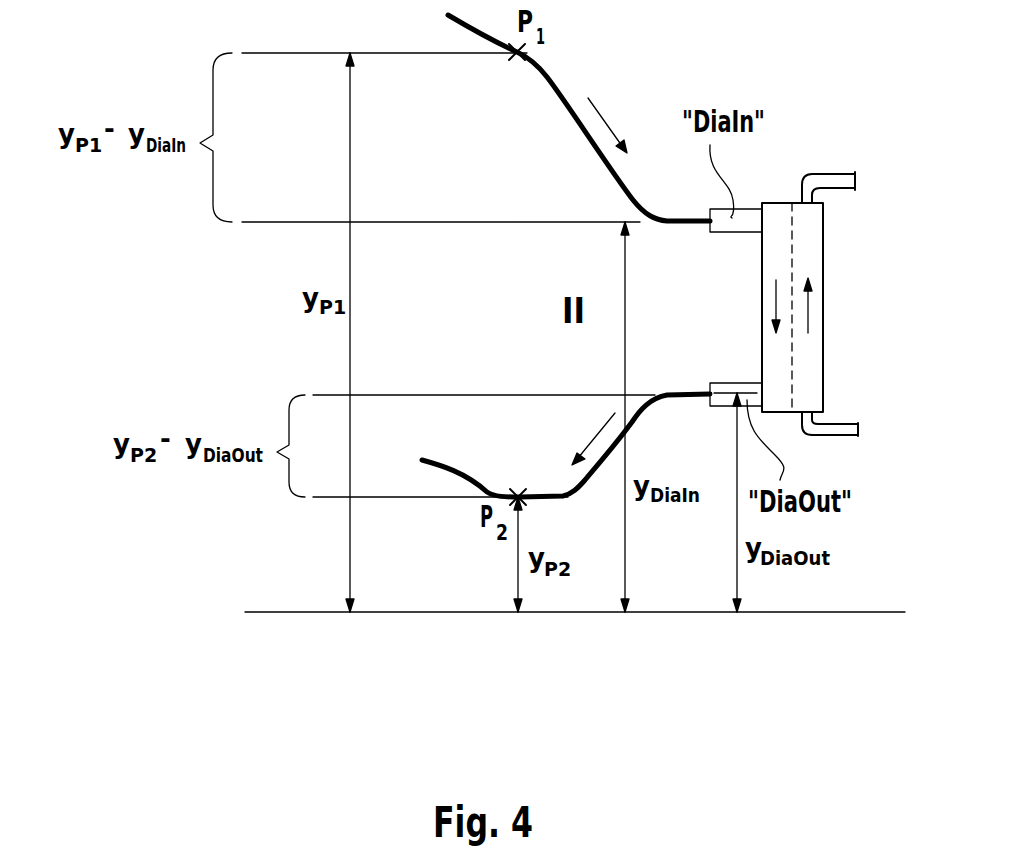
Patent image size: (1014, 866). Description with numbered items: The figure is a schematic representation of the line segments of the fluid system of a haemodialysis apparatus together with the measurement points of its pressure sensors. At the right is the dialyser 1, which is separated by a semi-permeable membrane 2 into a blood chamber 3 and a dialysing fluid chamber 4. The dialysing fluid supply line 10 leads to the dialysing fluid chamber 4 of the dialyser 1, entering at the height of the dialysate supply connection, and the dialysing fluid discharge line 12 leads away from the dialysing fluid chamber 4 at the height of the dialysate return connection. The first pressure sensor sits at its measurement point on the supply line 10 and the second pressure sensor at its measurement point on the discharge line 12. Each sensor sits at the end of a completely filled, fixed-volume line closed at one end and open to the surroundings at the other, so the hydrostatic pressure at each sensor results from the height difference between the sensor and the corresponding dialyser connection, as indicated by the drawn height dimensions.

The dialyser 1 is at (783, 188).
The semi-permeable membrane 2 is at (793, 229).
The blood chamber 3 is at (823, 388).
The dialysing fluid chamber 4 is at (765, 352).
The dialysing fluid supply line 10 is at (560, 88).
The dialysing fluid discharge line 12 is at (563, 492).